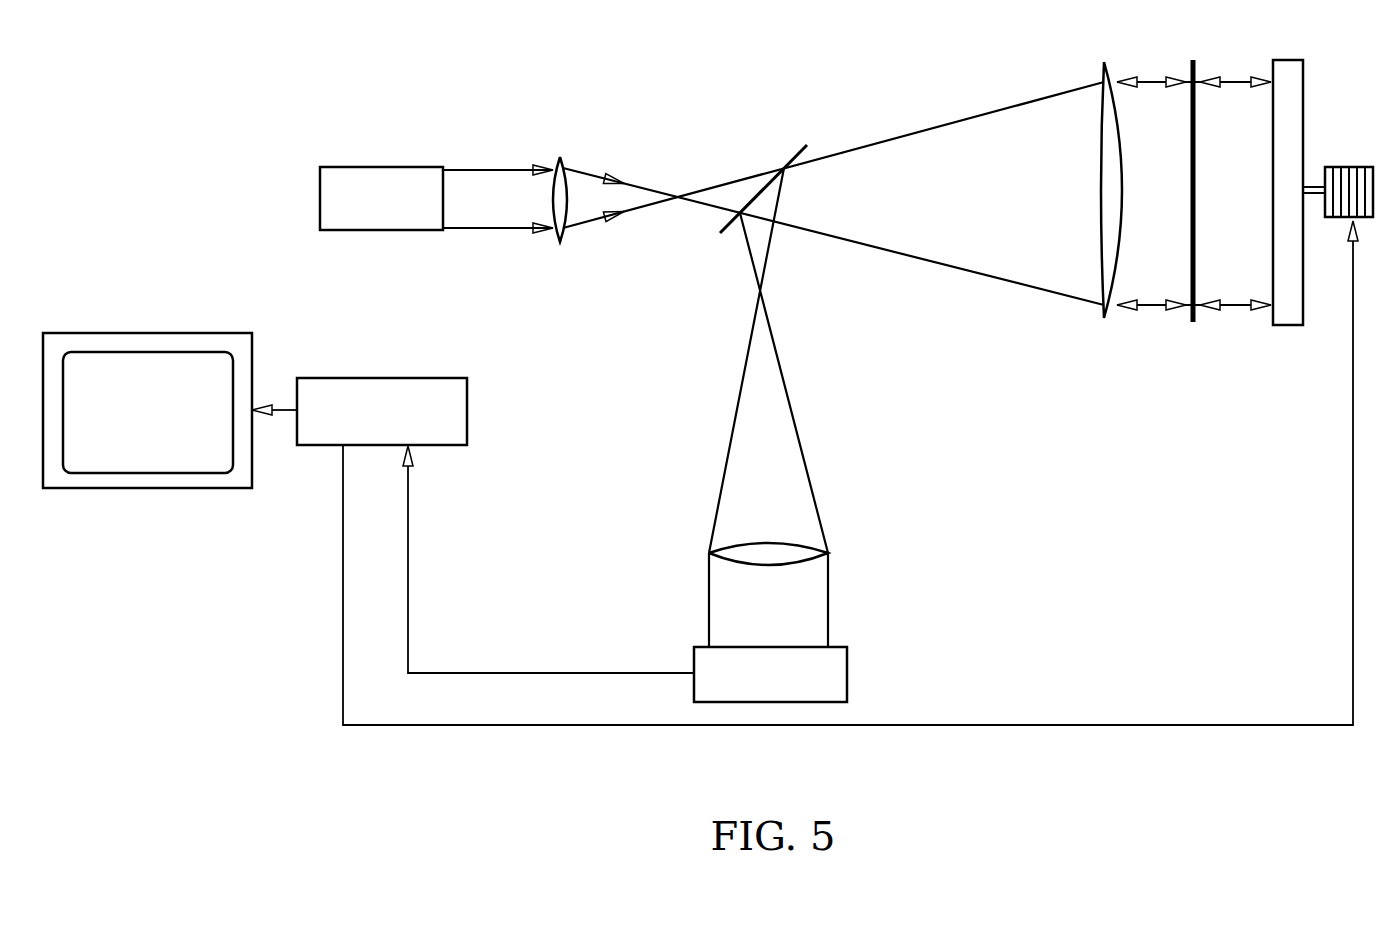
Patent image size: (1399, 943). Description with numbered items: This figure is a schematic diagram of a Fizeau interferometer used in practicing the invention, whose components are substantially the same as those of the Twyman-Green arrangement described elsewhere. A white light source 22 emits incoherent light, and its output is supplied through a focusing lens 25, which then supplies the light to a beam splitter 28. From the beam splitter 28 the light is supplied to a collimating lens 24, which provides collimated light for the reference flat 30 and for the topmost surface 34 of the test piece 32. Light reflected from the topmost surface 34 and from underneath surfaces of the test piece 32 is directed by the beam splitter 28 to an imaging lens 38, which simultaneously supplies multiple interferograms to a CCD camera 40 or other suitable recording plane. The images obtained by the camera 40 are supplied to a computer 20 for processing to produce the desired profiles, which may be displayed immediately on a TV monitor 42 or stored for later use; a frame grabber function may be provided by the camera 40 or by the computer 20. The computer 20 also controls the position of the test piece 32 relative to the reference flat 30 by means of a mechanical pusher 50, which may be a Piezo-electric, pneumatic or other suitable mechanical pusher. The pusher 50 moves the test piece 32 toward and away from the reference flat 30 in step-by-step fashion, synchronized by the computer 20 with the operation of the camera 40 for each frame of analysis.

The computer 20 is at (422, 378).
The white light source 22 is at (410, 167).
The collimating lens 24 is at (1100, 150).
The focusing lens 25 is at (567, 240).
The beam splitter 28 is at (763, 188).
The reference flat 30 is at (1195, 60).
The test piece 32 is at (1286, 60).
The topmost surface 34 is at (1275, 225).
The imaging lens 38 is at (745, 545).
The CCD camera 40 is at (843, 647).
The TV monitor 42 is at (150, 488).
The mechanical pusher 50 is at (1362, 217).